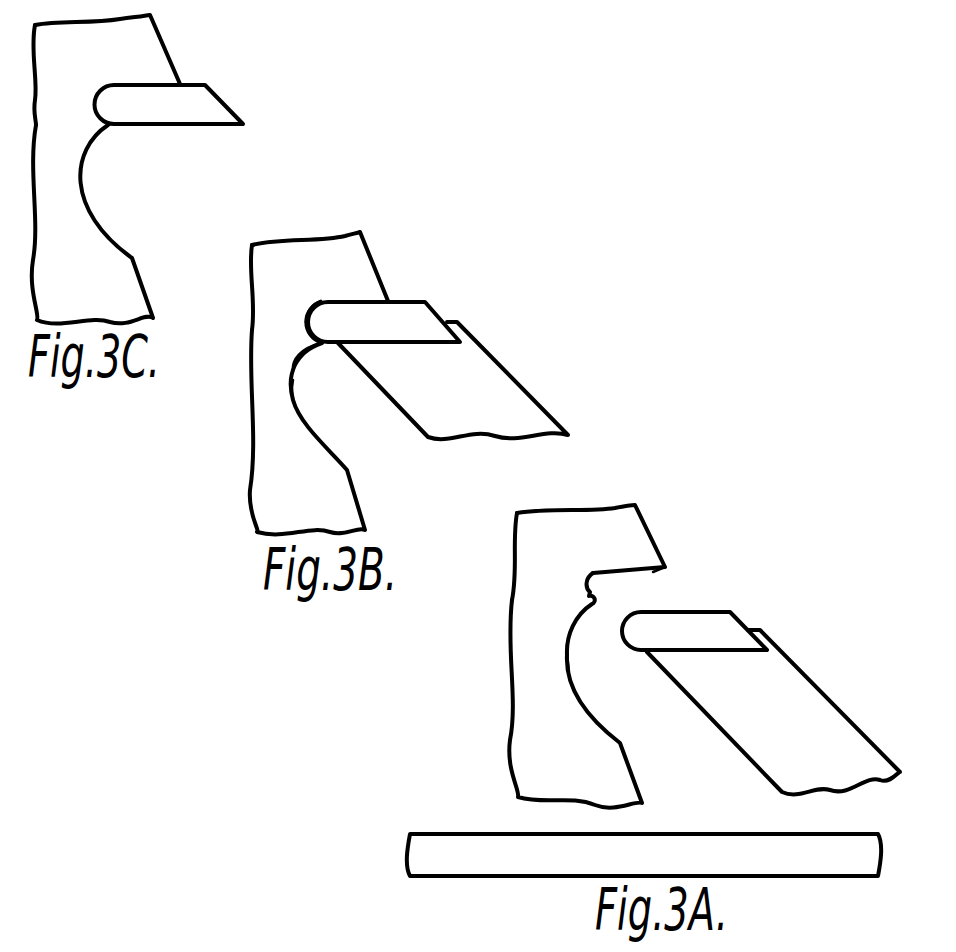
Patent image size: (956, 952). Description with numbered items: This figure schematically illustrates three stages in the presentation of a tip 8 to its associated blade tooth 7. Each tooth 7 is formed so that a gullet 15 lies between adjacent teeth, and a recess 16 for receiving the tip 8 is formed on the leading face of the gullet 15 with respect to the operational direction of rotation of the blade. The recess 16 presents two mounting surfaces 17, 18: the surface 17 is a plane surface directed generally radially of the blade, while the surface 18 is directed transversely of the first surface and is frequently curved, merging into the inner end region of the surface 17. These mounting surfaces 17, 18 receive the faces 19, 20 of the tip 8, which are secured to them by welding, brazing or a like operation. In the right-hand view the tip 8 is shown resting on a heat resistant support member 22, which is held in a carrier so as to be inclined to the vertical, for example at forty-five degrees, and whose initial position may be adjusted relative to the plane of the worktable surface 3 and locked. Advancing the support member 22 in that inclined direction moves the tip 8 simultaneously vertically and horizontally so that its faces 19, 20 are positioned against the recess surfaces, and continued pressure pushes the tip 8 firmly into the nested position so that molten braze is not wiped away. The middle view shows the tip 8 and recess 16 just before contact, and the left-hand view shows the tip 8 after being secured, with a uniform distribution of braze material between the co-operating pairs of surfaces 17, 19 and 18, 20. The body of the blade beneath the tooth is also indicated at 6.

In FIG. 3A, the worktable surface 3 is at (617, 868).
In FIG. 3C, the lower body portion of holder 6 is at (79, 275).
In FIG. 3B, the lower body portion of holder 6 is at (305, 502).
In FIG. 3A, the lower body portion of holder 6 is at (554, 720).
In FIG. 3C, the tooth 7 is at (118, 60).
In FIG. 3B, the tooth 7 is at (347, 277).
In FIG. 3A, the tooth 7 is at (592, 545).
In FIG. 3C, the tip 8 is at (169, 118).
In FIG. 3B, the tip 8 is at (397, 337).
In FIG. 3A, the tip 8 is at (697, 649).
In FIG. 3B, the gullet 15 is at (294, 395).
In FIG. 3A, the gullet 15 is at (567, 655).
In FIG. 3B, the recess 16 is at (316, 308).
In FIG. 3A, the recess 16 is at (588, 578).
In FIG. 3A, the mounting surface 17 is at (655, 572).
In FIG. 3A, the mounting surface 18 is at (588, 602).
In FIG. 3A, the bottom face of tip 19 is at (730, 612).
In FIG. 3B, the rear face of tip 20 is at (314, 327).
In FIG. 3A, the rear face of tip 20 is at (635, 648).
In FIG. 3B, the heat resistant support member 22 is at (469, 400).
In FIG. 3A, the heat resistant support member 22 is at (786, 720).